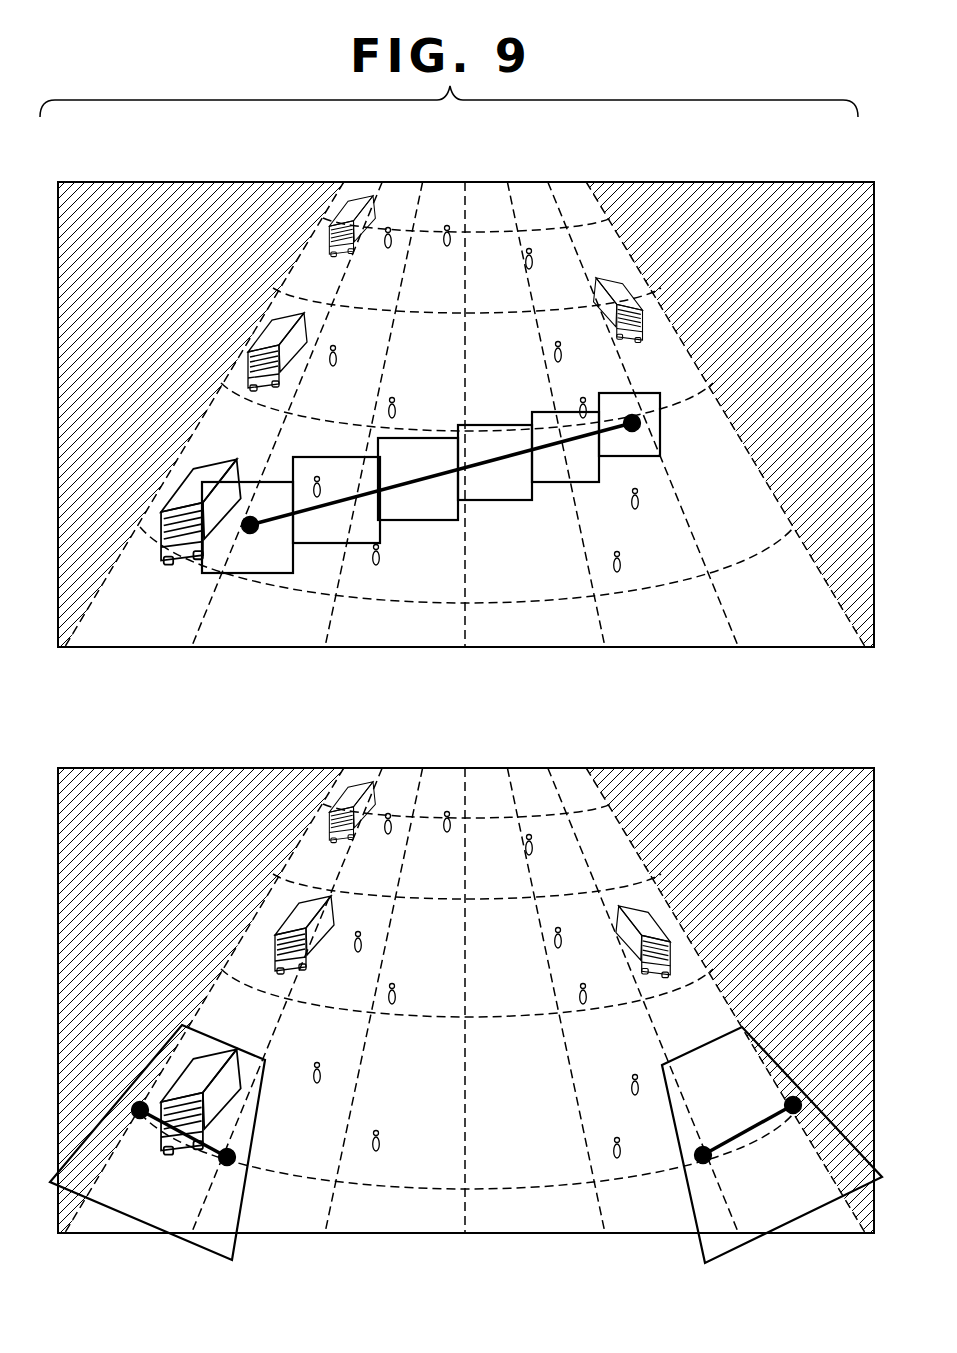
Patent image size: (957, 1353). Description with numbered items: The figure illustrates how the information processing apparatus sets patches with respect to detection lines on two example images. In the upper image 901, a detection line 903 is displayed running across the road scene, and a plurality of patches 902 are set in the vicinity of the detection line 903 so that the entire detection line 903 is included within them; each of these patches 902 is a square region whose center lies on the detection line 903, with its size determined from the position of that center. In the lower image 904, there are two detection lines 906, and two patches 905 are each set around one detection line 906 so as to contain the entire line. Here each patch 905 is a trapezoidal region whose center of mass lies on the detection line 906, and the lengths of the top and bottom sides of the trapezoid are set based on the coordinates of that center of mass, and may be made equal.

The image 901 is at (785, 181).
The patches 902 is at (252, 481).
The detection line 903 is at (634, 414).
The image 904 is at (788, 767).
The patches 905 is at (243, 1087).
The detection line 906 is at (218, 1158).